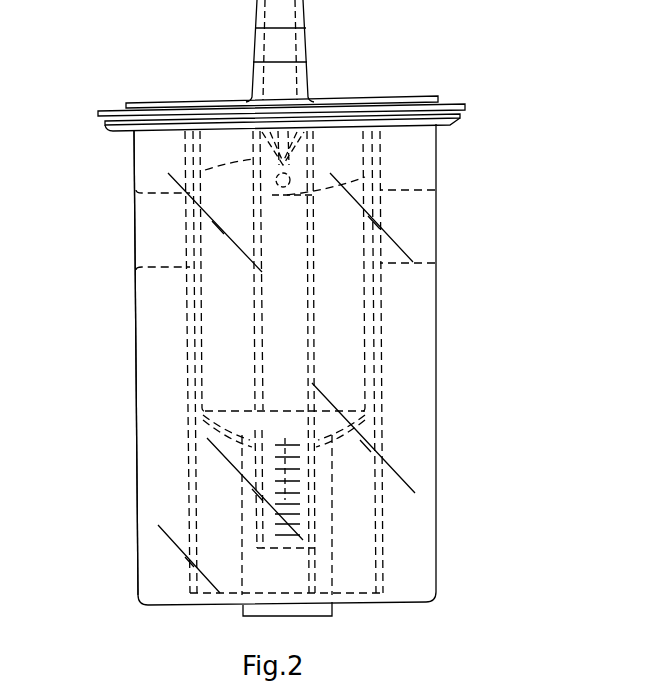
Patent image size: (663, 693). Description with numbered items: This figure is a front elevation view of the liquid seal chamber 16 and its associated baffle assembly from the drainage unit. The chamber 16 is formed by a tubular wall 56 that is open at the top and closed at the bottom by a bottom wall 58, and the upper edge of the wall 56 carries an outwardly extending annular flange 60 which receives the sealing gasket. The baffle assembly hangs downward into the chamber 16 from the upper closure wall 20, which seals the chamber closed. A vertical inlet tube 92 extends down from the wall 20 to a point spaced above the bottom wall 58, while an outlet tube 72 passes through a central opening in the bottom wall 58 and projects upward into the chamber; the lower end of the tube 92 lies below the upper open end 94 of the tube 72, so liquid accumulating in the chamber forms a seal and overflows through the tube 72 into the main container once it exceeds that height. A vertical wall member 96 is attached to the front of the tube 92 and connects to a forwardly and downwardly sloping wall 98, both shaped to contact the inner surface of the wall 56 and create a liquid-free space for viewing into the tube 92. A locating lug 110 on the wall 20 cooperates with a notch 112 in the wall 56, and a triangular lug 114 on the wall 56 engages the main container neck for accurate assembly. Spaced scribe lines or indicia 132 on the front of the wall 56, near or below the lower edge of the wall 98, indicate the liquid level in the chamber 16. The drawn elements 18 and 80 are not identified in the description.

The liquid seal chamber 16 is at (436, 318).
The nozzle 18 is at (285, 47).
The upper closure wall 20 is at (338, 100).
The tubular wall 56 is at (135, 318).
The bottom wall 58 is at (360, 605).
The annular flange 60 is at (465, 115).
The vertical tube 72 is at (335, 568).
The mounting plate 80 is at (455, 103).
The vertical tube 92 is at (285, 315).
The upper open end 94 is at (190, 422).
The vertical wall member 96 is at (337, 365).
The sloping wall 98 is at (375, 412).
The locating lug 110 is at (248, 100).
The notch 112 is at (200, 168).
The triangular shaped lug 114 is at (380, 165).
The indicia 132 is at (285, 537).